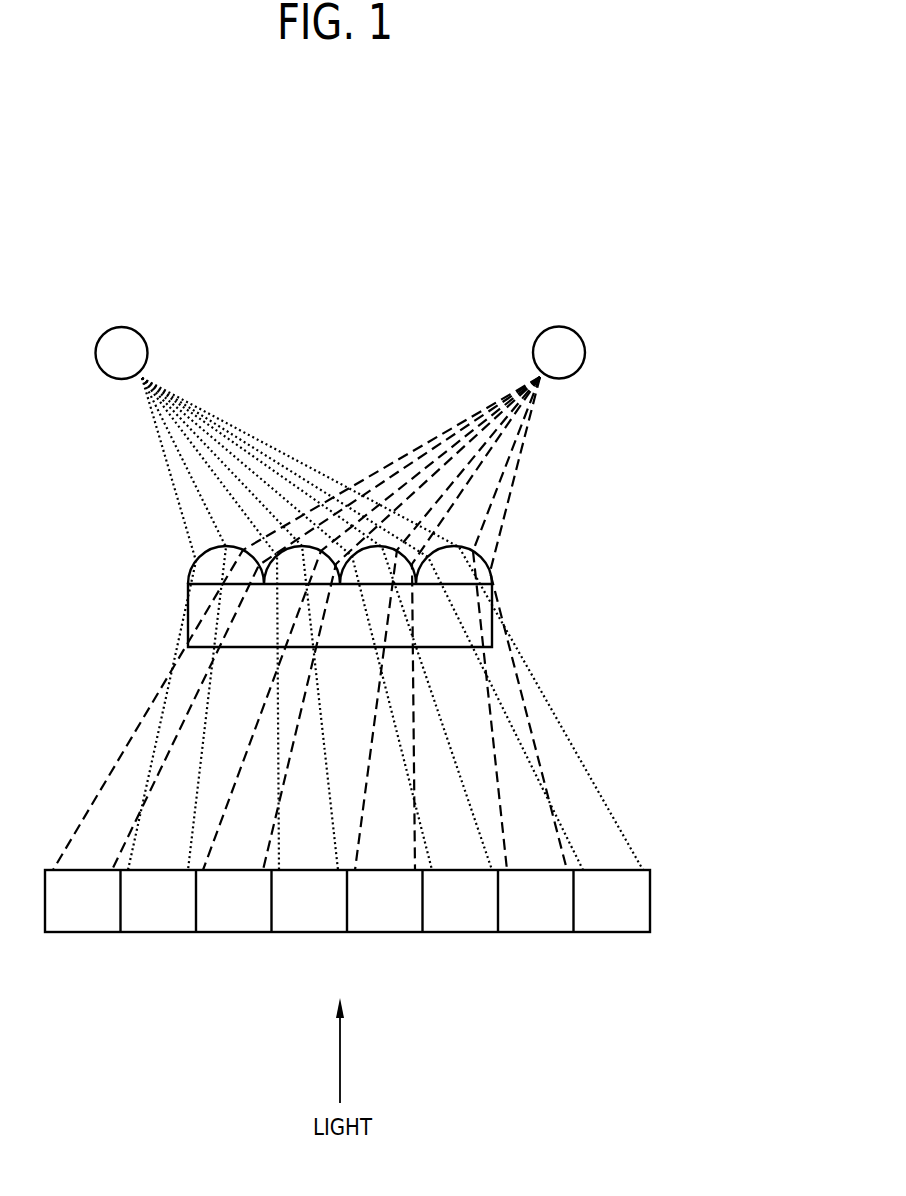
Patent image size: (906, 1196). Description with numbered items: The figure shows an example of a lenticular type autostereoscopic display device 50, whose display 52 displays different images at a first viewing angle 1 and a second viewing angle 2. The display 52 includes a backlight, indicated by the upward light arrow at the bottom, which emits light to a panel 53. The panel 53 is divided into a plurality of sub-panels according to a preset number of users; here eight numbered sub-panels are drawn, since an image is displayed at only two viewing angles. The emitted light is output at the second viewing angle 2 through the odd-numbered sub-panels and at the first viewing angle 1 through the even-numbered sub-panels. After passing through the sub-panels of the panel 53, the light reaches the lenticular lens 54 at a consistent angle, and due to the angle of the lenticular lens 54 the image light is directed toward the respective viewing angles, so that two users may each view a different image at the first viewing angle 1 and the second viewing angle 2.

The autostereoscopic display device 50 is at (640, 438).
The display 52 is at (778, 615).
The panel 53 is at (409, 901).
The lenticular lens 54 is at (480, 596).
The viewing angle ① 1 is at (370, 598).
The viewing angle ② 2 is at (319, 599).